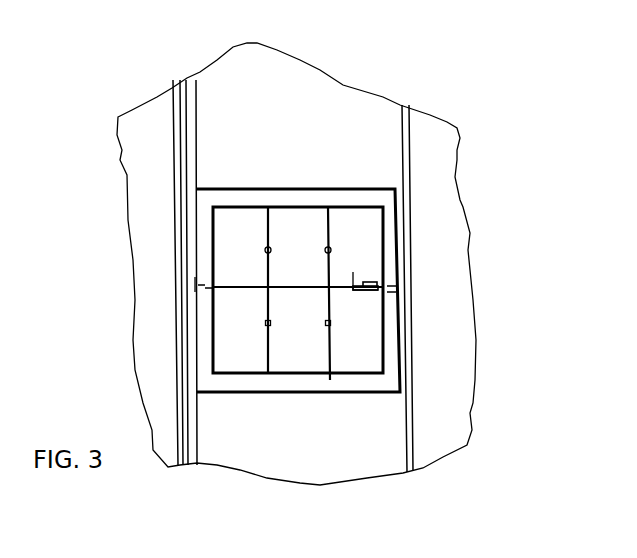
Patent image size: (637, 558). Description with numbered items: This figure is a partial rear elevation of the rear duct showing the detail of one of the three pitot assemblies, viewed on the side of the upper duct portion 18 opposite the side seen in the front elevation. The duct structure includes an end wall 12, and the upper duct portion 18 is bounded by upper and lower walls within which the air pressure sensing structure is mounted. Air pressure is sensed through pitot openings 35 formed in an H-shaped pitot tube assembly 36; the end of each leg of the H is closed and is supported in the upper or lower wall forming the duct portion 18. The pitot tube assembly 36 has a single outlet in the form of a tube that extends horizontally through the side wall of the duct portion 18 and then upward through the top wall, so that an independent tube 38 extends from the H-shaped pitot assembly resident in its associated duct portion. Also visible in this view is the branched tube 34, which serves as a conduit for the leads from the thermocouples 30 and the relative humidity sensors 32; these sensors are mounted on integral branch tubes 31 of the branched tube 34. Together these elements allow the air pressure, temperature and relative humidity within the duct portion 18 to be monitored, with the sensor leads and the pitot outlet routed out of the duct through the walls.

The end wall 12 is at (332, 113).
The upper duct portion 18 is at (365, 190).
The thermocouple 30 is at (353, 272).
The integral branch tube 31 is at (360, 294).
The relative humidity sensor 32 is at (367, 280).
The branched tube 34 is at (410, 138).
The pitot opening 35 is at (265, 248).
The pitot tube assembly 36 is at (267, 222).
The independent tube 38 is at (197, 97).